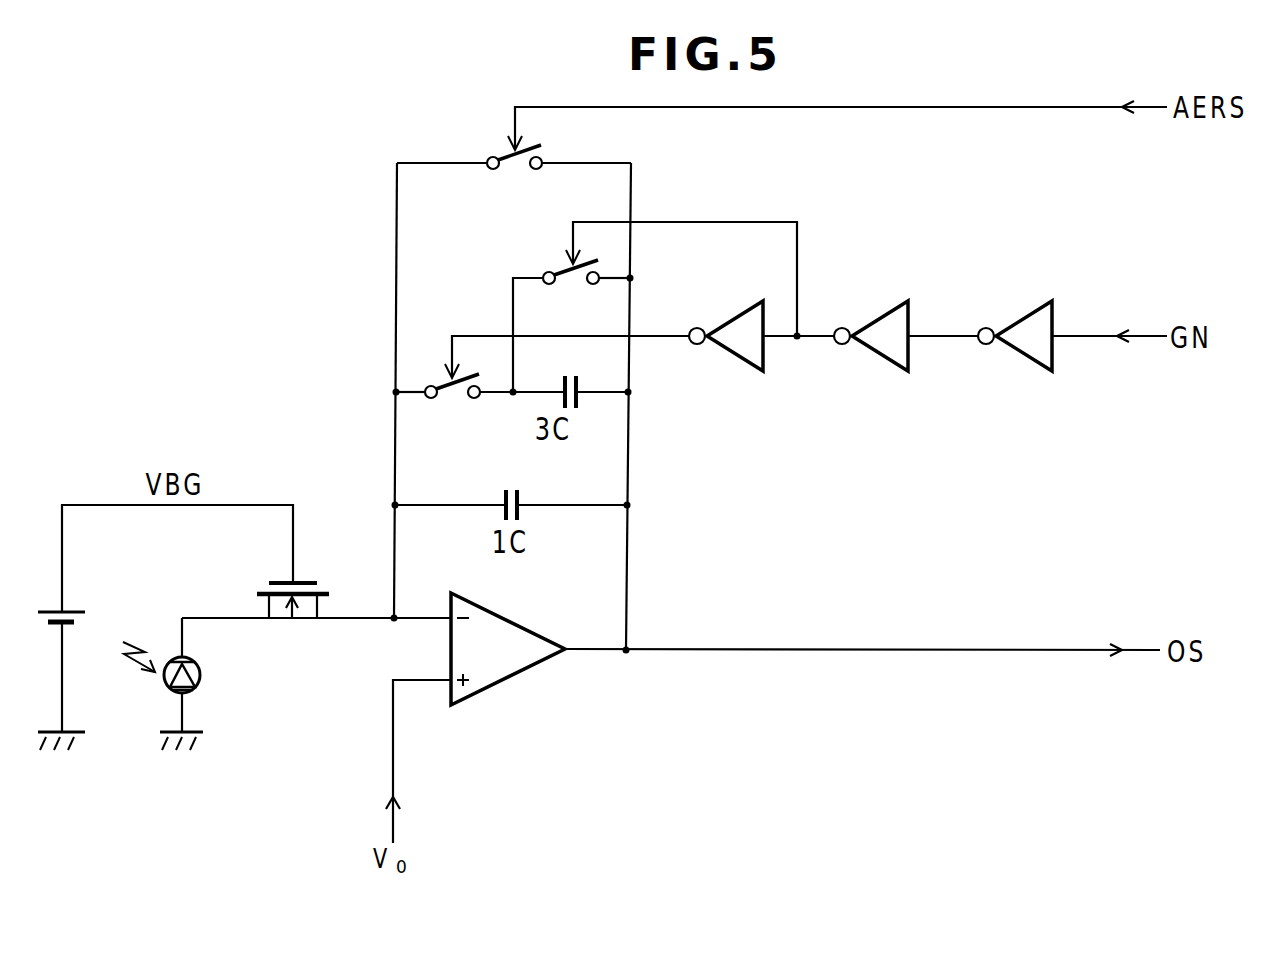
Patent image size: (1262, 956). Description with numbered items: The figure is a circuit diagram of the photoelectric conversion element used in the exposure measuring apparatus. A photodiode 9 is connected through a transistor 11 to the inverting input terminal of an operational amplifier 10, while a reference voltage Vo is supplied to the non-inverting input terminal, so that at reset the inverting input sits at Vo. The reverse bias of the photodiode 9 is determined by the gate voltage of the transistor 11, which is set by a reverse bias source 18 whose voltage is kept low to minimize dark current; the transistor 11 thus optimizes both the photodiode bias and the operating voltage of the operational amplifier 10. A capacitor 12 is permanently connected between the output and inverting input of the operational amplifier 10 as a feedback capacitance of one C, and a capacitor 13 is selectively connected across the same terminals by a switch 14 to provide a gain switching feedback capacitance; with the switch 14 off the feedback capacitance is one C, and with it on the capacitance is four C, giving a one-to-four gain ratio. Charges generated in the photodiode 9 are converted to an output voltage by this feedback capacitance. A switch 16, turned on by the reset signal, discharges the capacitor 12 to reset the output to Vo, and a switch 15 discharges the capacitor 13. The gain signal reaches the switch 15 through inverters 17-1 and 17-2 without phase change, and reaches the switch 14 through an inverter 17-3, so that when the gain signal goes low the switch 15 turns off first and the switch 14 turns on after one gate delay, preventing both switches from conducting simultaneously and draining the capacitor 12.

The photodiode 9 is at (203, 680).
The operational amplifier 10 is at (513, 673).
The transistor 11 is at (308, 610).
The capacitor 12 is at (510, 488).
The capacitor 13 is at (572, 371).
The switch 14 is at (455, 396).
The switch 15 is at (572, 288).
The switch 16 is at (520, 166).
The inverter 17-1 is at (1036, 363).
The inverter 17-2 is at (892, 363).
The inverter 17-3 is at (748, 363).
The reverse bias source 18 is at (70, 607).